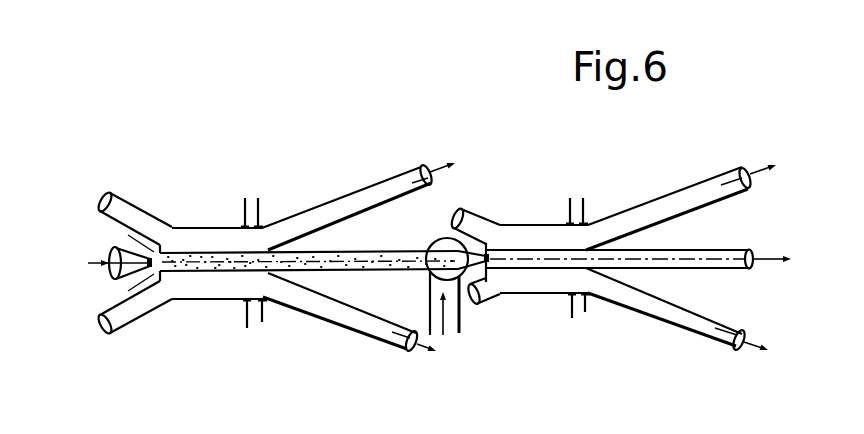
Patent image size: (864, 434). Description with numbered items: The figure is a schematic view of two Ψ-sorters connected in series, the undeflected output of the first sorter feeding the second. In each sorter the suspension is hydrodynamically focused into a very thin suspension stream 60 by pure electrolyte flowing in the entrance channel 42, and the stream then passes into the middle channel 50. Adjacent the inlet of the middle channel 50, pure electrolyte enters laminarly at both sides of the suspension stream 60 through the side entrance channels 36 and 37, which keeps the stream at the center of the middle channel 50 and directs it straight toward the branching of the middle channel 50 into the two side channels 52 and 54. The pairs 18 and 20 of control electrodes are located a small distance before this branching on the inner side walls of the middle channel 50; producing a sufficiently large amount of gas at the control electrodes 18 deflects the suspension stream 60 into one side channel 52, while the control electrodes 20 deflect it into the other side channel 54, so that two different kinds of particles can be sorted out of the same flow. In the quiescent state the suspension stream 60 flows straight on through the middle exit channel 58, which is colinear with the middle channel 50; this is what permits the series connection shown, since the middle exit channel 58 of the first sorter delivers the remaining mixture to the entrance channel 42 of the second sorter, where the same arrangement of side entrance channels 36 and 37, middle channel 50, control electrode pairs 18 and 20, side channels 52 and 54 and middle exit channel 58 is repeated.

The pair of control electrodes 18 is at (262, 322).
The pair of control electrodes 20 is at (258, 200).
The side entrance channel 36 is at (158, 310).
The side entrance channel 37 is at (156, 219).
The entrance channel 42 is at (453, 328).
The middle channel 50 is at (199, 290).
The side channel 52 is at (351, 206).
The side channel 54 is at (365, 325).
The middle exit channel 58 is at (395, 258).
The suspension stream 60 is at (188, 256).